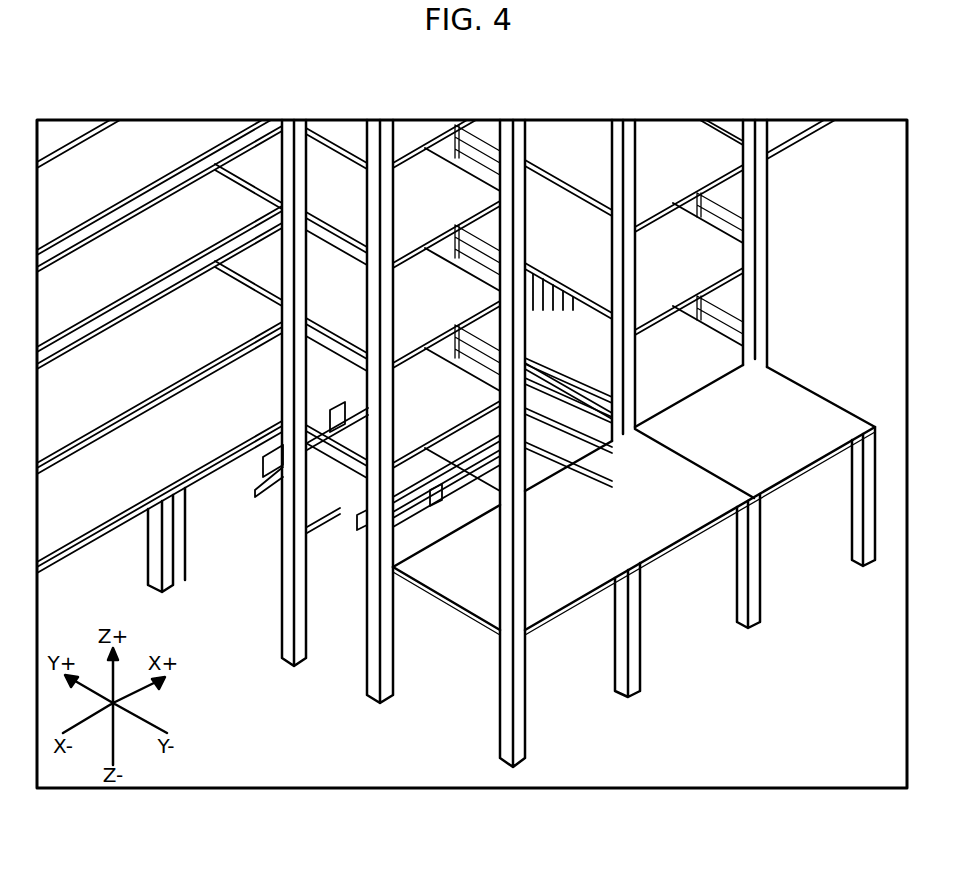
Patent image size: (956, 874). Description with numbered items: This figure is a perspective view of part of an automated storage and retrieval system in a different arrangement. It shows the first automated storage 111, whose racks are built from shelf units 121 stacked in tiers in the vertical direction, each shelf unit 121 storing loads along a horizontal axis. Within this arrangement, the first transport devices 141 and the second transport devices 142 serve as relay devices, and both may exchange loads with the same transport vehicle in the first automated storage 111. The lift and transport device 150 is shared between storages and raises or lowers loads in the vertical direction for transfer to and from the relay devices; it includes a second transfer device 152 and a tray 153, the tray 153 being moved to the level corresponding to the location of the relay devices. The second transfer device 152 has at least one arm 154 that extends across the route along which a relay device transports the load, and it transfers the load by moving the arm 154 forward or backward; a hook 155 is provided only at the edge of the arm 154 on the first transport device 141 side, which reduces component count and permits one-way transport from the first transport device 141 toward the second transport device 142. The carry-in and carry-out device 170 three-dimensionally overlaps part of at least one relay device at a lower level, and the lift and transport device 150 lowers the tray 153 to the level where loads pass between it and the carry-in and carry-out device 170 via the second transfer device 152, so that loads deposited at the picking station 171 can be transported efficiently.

The first automated storage 111 is at (176, 152).
The shelf unit 121 is at (802, 132).
The first transport device 141 is at (340, 418).
The second transport device 142 is at (703, 258).
The lift and transport device 150 is at (618, 527).
The second transfer device 152 is at (542, 450).
The tray 153 is at (553, 390).
The arm 154 is at (445, 488).
The hook 155 is at (357, 520).
The carry-in and carry-out device 170 is at (553, 618).
The picking station 171 is at (567, 427).